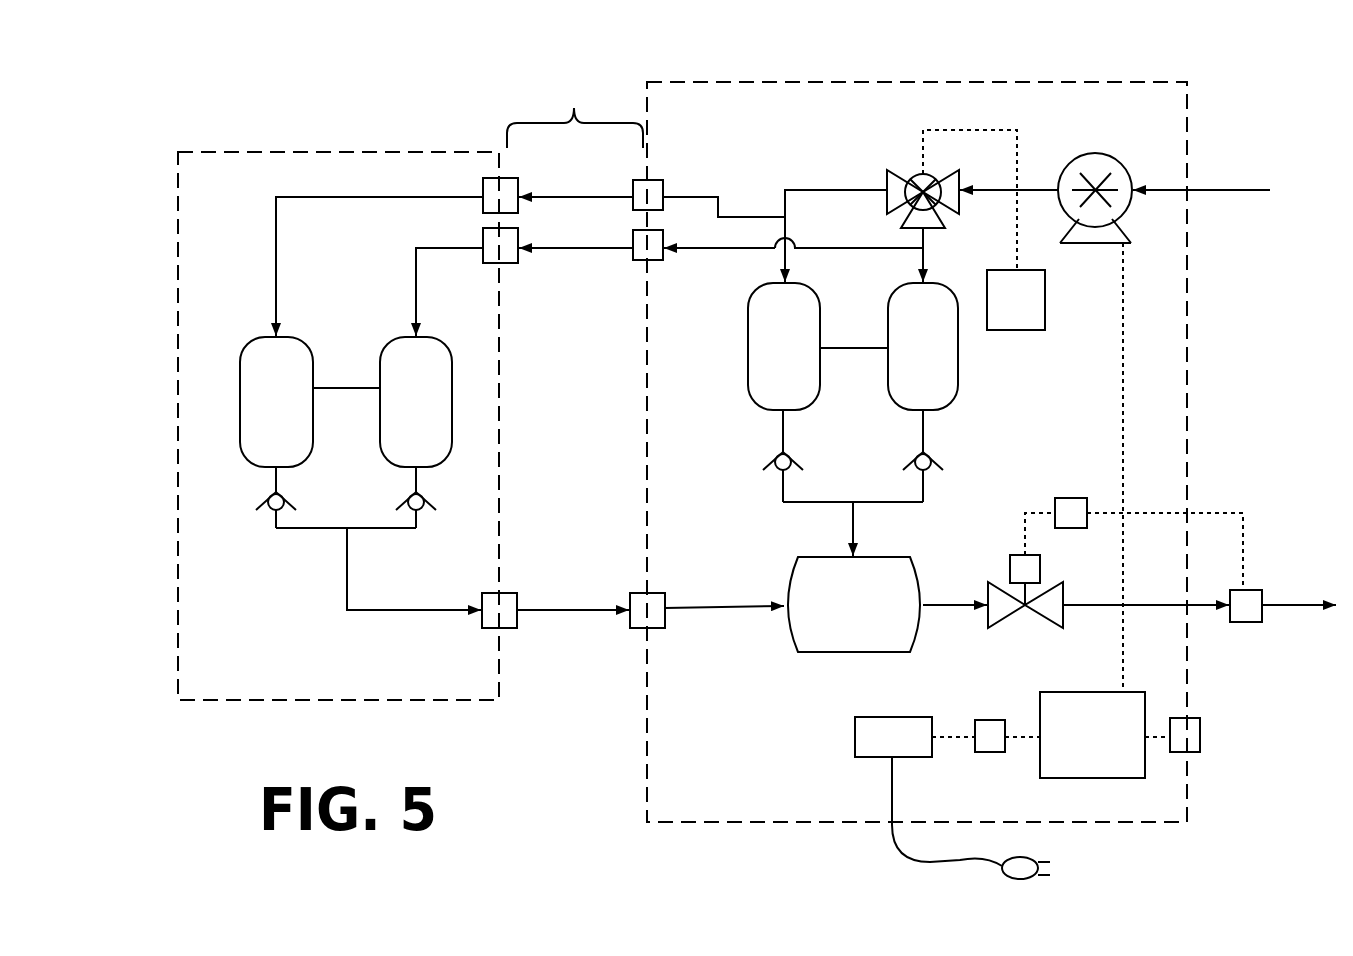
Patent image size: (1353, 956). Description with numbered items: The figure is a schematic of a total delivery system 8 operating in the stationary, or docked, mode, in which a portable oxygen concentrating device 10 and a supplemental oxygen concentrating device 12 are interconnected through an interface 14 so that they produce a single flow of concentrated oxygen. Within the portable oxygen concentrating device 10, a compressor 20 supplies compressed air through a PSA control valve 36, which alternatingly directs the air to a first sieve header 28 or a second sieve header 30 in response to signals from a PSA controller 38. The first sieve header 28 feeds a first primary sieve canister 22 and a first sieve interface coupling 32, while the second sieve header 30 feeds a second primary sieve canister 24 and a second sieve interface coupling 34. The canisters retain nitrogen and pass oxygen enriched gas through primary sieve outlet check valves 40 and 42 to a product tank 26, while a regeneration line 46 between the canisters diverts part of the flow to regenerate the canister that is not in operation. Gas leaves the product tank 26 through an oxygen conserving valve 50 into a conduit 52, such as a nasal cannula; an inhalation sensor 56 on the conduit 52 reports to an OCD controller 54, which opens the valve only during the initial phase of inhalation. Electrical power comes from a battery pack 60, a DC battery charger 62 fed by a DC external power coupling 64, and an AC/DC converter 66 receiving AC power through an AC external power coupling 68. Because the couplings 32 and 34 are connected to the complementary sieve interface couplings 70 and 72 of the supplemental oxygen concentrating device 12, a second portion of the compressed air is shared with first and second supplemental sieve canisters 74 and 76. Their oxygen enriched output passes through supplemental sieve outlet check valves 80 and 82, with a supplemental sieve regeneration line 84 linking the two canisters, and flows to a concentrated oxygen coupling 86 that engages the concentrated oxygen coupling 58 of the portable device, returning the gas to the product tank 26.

The total delivery system 8 is at (419, 86).
The portable oxygen concentrating device 10 is at (858, 82).
The supplemental oxygen concentrating device 12 is at (342, 151).
The interface 14 is at (575, 109).
The compressor 20 is at (1118, 152).
The first primary sieve canister 22 is at (768, 367).
The second primary sieve canister 24 is at (910, 367).
The product tank 26 is at (837, 621).
The first sieve header 28 is at (814, 190).
The second sieve header 30 is at (925, 235).
The first sieve interface coupling 32 is at (663, 185).
The second sieve interface coupling 34 is at (655, 262).
The PSA control valve 36 is at (906, 178).
The PSA controller 38 is at (1001, 317).
The first primary sieve outlet check valve 40 is at (768, 458).
The second primary sieve outlet check valve 42 is at (935, 460).
The regeneration line 46 is at (855, 345).
The oxygen conserving valve 50 is at (1010, 565).
The conduit 52 is at (1143, 608).
The OCD controller 54 is at (1073, 497).
The inhalation sensor 56 is at (1262, 597).
The concentrated oxygen coupling 58 is at (665, 602).
The battery pack 60 is at (1077, 751).
The DC battery charger 62 is at (990, 718).
The DC external power coupling 64 is at (1205, 728).
The AC/DC converter 66 is at (910, 716).
The AC external power coupling 68 is at (1010, 878).
The first sieve interface coupling 70 is at (518, 185).
The second sieve interface coupling 72 is at (508, 265).
The first supplemental sieve canister 74 is at (261, 422).
The second supplemental sieve canister 76 is at (401, 422).
The first supplemental sieve outlet check valve 80 is at (263, 493).
The second supplemental sieve outlet check valve 82 is at (425, 496).
The supplemental sieve regeneration line 84 is at (340, 386).
The concentrated oxygen coupling 86 is at (518, 603).